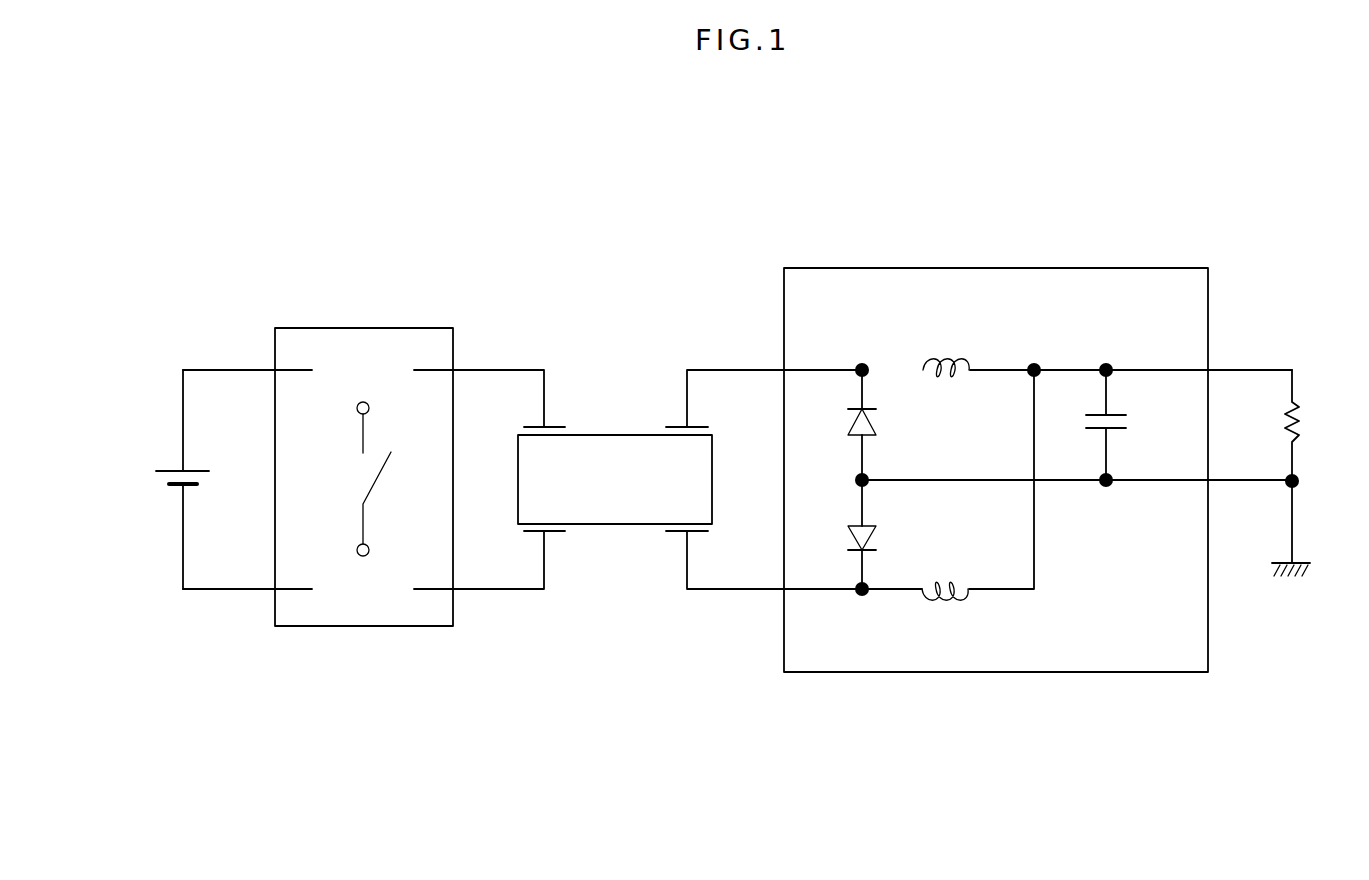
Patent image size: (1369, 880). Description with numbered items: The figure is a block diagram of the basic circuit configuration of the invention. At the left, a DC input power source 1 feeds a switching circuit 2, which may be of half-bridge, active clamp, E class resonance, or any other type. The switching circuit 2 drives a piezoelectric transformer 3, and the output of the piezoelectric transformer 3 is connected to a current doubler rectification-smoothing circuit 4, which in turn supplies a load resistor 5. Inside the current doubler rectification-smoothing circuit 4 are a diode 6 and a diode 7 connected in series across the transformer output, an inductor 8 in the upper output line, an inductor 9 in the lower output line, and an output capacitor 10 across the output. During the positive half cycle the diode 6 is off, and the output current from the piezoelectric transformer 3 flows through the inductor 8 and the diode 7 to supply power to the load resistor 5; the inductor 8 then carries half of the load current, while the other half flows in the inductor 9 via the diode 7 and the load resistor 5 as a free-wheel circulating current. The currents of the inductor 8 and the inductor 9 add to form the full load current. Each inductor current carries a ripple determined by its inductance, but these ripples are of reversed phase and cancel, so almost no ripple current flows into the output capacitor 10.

The DC input power source 1 is at (160, 478).
The switching circuit 2 is at (370, 328).
The piezoelectric transformer 3 is at (613, 435).
The current doubler rectification-smoothing circuit 4 is at (1062, 268).
The load resistor 5 is at (1302, 418).
The diode 6 is at (877, 426).
The diode 7 is at (876, 541).
The inductor 8 is at (949, 366).
The inductor 9 is at (931, 594).
The output capacitor 10 is at (1128, 424).